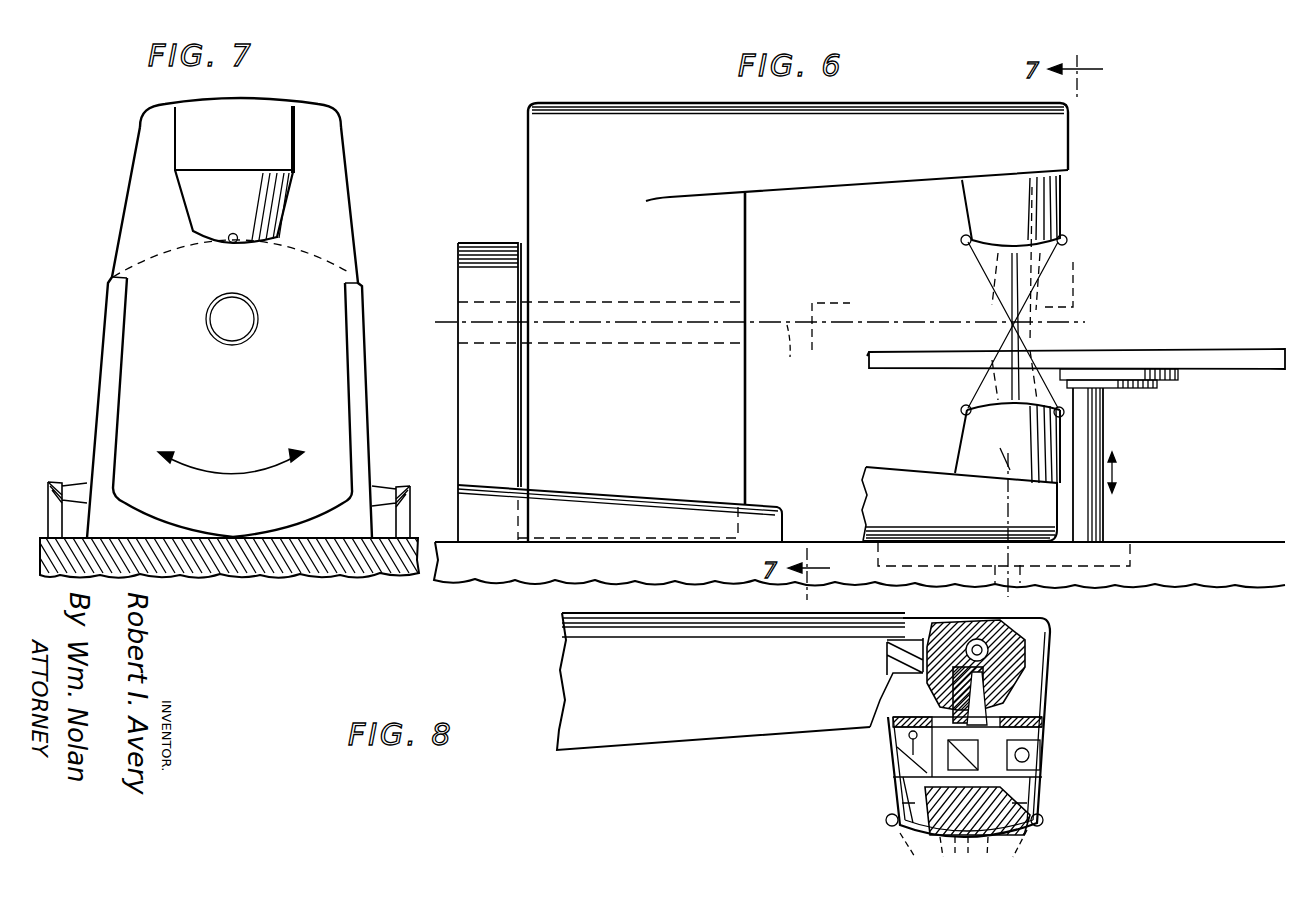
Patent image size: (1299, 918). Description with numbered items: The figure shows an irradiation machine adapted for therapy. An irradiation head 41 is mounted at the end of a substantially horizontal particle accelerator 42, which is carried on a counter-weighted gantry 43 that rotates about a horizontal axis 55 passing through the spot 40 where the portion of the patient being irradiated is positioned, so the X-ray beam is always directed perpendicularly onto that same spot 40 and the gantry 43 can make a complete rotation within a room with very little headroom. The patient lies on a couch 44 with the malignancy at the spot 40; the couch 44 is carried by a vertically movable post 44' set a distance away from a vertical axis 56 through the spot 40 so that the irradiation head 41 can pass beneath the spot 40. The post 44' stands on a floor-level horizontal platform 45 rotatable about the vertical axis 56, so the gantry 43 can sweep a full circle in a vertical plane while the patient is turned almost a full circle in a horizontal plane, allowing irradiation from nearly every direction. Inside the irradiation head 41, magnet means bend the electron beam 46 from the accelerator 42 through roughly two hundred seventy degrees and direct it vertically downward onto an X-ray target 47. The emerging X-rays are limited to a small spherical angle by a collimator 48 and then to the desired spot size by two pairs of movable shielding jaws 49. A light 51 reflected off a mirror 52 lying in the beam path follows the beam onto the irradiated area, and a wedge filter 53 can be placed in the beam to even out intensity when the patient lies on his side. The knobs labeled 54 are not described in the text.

In FIG. 6, the spot 40 is at (775, 306).
In FIG. 7, the irradiation head 41 is at (268, 197).
In FIG. 6, the irradiation head 41 is at (1040, 148).
In FIG. 8, the irradiation head 41 is at (1047, 652).
In FIG. 6, the particle accelerator 42 is at (763, 138).
In FIG. 8, the particle accelerator 42 is at (910, 652).
In FIG. 7, the counter-weighted gantry 43 is at (308, 376).
In FIG. 6, the counter-weighted gantry 43 is at (570, 240).
In FIG. 6, the couch 44 is at (1076, 378).
In FIG. 6, the vertically movable post 44' is at (1122, 465).
In FIG. 6, the floor level horizontal platform 45 is at (1082, 550).
In FIG. 8, the electron beam 46 is at (948, 668).
In FIG. 8, the X-ray target 47 is at (988, 656).
In FIG. 8, the collimator 48 is at (983, 697).
In FIG. 8, the movable shielding jaws 49 is at (1022, 820).
In FIG. 8, the light 51 is at (908, 737).
In FIG. 8, the mirror 52 is at (1008, 757).
In FIG. 8, the wedge filter 53 is at (1007, 729).
In FIG. 7, the ball knob 54 is at (232, 243).
In FIG. 6, the ball knob 54 is at (960, 240).
In FIG. 8, the ball knob 54 is at (888, 821).
In FIG. 6, the horizontal axis 55 is at (784, 356).
In FIG. 6, the vertical axis 56 is at (1007, 453).